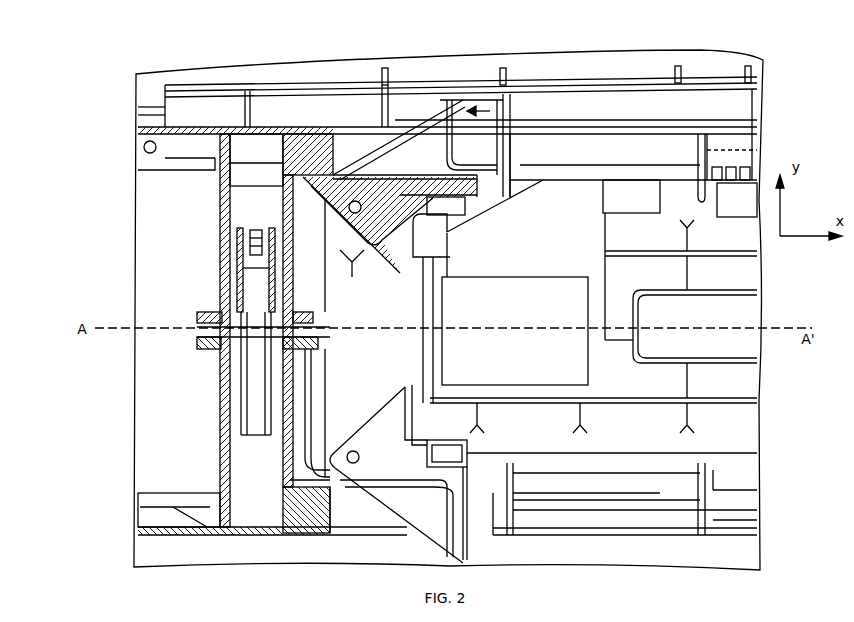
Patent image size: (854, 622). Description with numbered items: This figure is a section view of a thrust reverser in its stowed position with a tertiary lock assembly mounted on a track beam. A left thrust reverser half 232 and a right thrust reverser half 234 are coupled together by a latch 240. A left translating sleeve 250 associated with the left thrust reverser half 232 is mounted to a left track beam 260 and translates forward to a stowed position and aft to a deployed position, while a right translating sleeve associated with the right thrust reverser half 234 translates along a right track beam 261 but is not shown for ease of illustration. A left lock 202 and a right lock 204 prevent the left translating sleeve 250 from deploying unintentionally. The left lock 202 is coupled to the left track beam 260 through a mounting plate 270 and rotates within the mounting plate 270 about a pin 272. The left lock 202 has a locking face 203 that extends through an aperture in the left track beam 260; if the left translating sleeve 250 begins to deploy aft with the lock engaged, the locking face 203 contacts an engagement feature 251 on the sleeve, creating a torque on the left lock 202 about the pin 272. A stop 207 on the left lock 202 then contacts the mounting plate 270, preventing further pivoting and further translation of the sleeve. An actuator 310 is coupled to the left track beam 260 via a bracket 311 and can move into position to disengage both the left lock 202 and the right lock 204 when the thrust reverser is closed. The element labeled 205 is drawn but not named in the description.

The left lock 202 is at (388, 152).
The locking face 203 is at (468, 100).
The right lock 204 is at (430, 543).
The conical plate 205 is at (426, 120).
The stop 207 is at (472, 207).
The left thrust reverser half 232 is at (305, 190).
The right thrust reverser half 234 is at (222, 460).
The latch 240 is at (222, 312).
The left translating sleeve 250 is at (335, 85).
The engagement feature 251 is at (497, 153).
The left track beam 260 is at (530, 130).
The right track beam 261 is at (547, 540).
The mounting plate 270 is at (322, 210).
The pin 272 is at (378, 210).
The actuator 310 is at (548, 390).
The bracket 311 is at (620, 180).